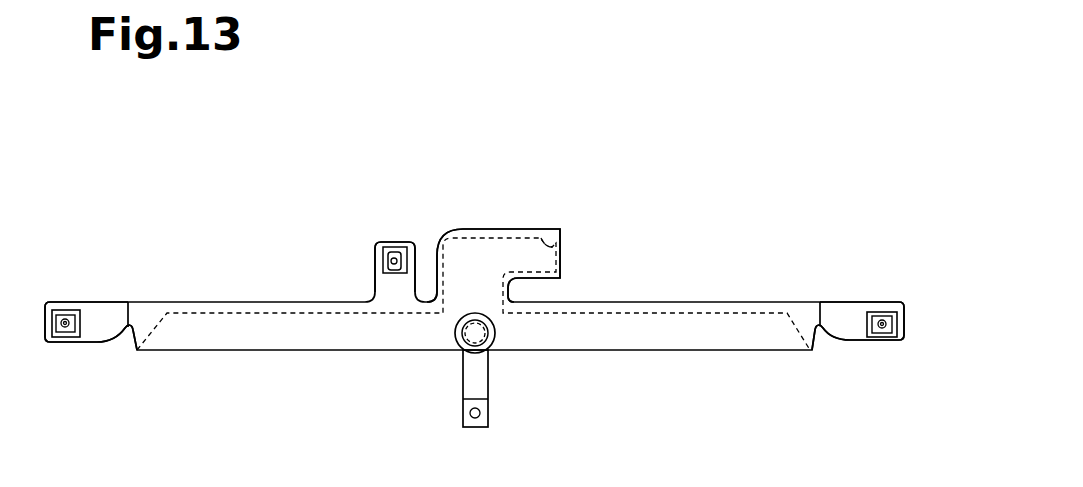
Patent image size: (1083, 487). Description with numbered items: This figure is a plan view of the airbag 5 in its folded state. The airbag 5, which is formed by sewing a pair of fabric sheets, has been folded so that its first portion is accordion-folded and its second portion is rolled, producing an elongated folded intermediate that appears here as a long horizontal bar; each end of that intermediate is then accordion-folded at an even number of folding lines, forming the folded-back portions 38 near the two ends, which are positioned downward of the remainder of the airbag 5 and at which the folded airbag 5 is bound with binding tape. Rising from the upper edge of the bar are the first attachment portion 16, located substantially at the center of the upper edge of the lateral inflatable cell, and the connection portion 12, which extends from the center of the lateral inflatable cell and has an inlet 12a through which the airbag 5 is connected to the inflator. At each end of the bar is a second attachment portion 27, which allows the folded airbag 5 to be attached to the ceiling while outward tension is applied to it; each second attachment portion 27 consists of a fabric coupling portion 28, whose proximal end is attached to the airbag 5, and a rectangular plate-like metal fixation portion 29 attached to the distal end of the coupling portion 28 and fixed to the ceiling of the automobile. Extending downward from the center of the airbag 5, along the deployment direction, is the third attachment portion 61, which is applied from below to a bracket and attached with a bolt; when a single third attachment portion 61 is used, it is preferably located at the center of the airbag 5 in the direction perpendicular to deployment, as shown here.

The airbag 5 is at (281, 302).
The connection portion 12 is at (509, 229).
The inlet 12a is at (558, 244).
The first attachment portion 16 is at (384, 242).
The second attachment portion 27 is at (48, 386).
The coupling portion 28 is at (117, 326).
The fixation portion 29 is at (75, 333).
The folded-back portion 38 is at (148, 302).
The third attachment portion 61 is at (489, 405).